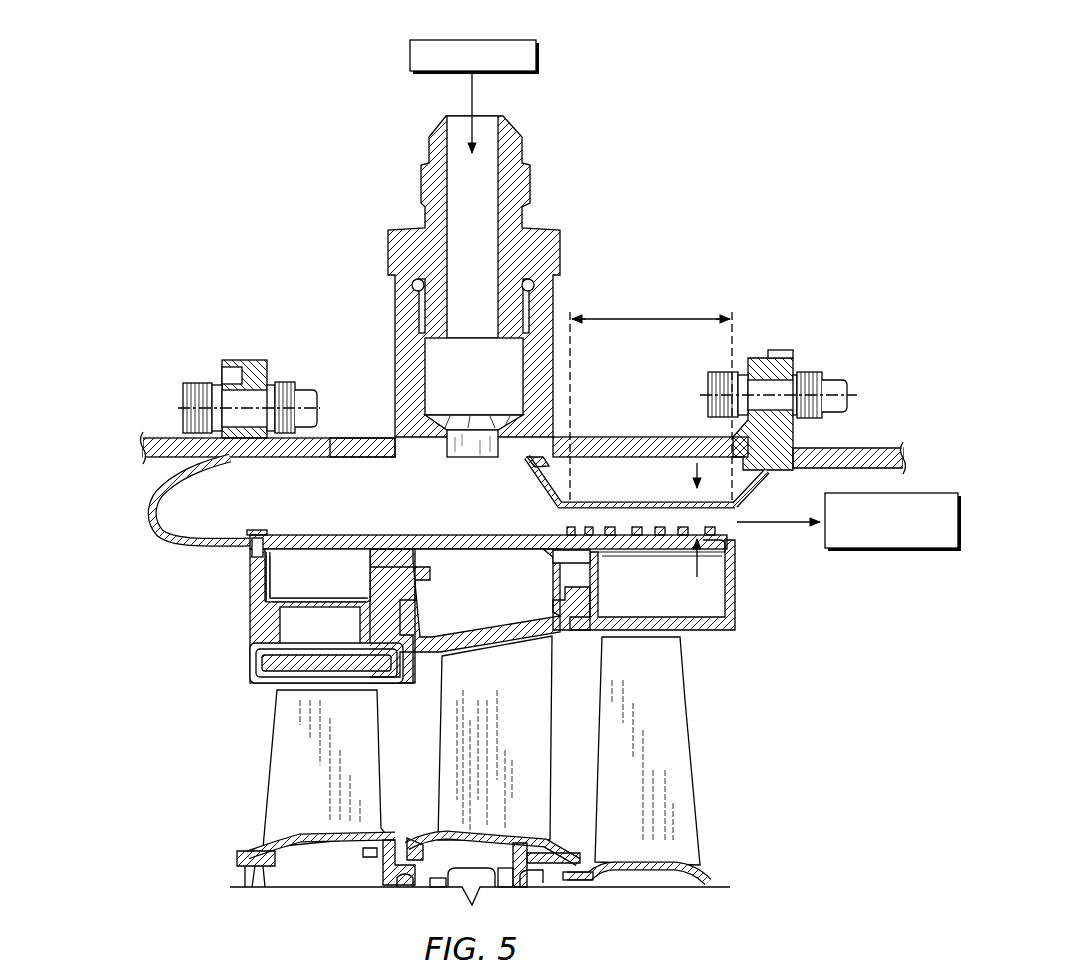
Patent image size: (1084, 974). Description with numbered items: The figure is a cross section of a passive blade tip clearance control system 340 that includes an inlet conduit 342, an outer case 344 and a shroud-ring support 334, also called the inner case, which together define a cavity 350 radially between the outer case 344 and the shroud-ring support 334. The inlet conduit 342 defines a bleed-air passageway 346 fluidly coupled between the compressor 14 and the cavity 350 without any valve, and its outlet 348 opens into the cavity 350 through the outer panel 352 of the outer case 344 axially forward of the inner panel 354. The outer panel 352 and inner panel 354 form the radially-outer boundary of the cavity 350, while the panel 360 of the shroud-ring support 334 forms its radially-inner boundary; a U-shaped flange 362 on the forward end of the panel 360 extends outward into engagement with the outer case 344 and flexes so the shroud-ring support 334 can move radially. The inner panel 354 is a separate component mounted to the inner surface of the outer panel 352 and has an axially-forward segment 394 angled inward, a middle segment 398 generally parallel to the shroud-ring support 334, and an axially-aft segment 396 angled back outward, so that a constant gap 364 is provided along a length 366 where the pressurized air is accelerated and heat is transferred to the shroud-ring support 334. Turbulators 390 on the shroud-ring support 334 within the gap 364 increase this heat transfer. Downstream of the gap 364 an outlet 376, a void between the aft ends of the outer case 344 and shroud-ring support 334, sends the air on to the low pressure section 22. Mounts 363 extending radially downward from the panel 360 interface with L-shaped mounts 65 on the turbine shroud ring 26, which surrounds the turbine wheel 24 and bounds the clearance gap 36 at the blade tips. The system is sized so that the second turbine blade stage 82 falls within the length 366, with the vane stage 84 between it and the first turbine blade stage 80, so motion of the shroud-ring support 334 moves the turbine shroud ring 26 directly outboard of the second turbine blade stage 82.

The compressor 14 is at (457, 38).
The low pressure section 22 is at (931, 493).
The turbine wheel 24 is at (182, 842).
The turbine shroud ring 26 is at (271, 617).
The clearance gap 36 is at (639, 641).
The mounts 65 is at (354, 582).
The first turbine blade stage 80 is at (340, 793).
The second turbine blade stage 82 is at (660, 790).
The vane stage 84 is at (515, 787).
The shroud-ring support 334 is at (143, 504).
The passive blade tip clearance control system 340 is at (523, 359).
The inlet conduit 342 is at (461, 305).
The outer case 344 is at (274, 348).
The bleed-air passageway 346 is at (476, 266).
The outlet 348 is at (465, 458).
The cavity 350 is at (343, 483).
The outer panel 352 is at (377, 431).
The inner panel 354 is at (497, 490).
The panel 360 is at (364, 524).
The flange 362 is at (168, 544).
The mounts 363 is at (551, 557).
The gap 364 is at (738, 590).
The length 366 is at (648, 318).
The outlet 376 is at (736, 530).
The turbulators 390 is at (618, 540).
The axially-forward segment 394 is at (553, 490).
The axially-aft segment 396 is at (750, 488).
The middle segment 398 is at (609, 489).